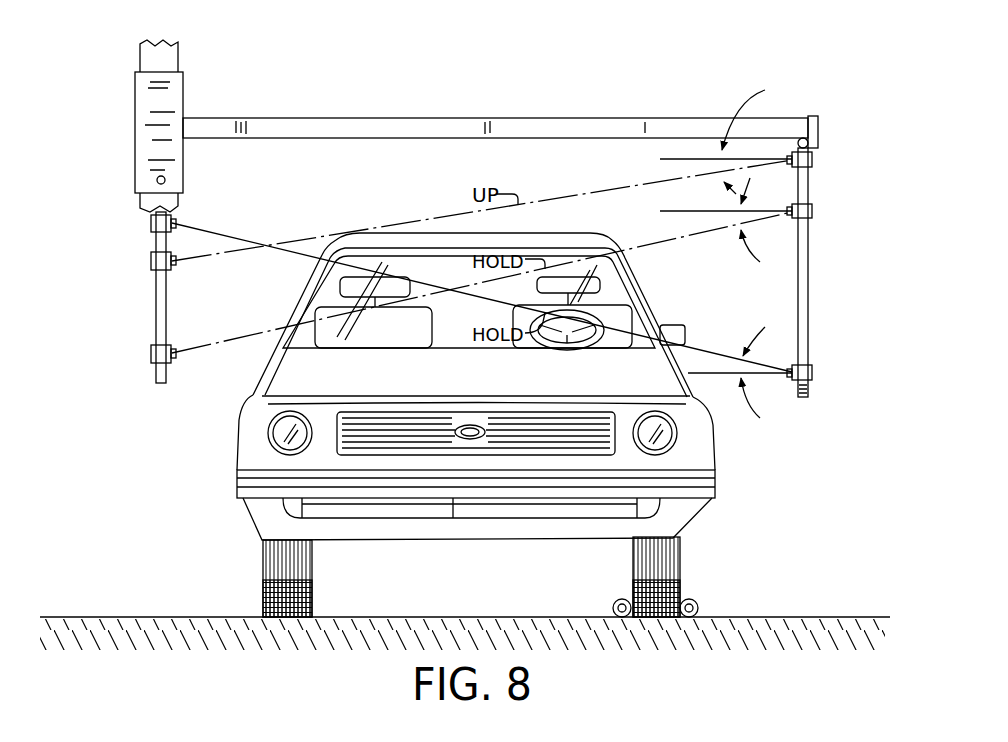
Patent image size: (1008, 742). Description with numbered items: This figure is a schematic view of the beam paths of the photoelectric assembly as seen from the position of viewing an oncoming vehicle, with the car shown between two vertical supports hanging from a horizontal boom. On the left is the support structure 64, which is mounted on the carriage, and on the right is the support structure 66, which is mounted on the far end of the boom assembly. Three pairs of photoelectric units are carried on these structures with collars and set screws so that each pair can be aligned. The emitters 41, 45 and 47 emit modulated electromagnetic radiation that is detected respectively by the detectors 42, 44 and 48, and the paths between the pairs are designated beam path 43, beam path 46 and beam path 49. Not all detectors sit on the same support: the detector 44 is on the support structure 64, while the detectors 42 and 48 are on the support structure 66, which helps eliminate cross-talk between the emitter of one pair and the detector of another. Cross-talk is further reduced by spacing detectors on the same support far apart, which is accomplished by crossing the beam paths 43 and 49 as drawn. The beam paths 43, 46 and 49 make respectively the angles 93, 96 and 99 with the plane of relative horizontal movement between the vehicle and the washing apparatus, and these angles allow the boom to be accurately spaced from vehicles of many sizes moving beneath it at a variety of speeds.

The emitter 41 is at (151, 262).
The detector 42 is at (812, 160).
The beam path 43 is at (623, 187).
The detector 44 is at (151, 354).
The emitter 45 is at (812, 212).
The beam path 46 is at (667, 243).
The emitter 47 is at (151, 220).
The detector 48 is at (812, 370).
The beam path 49 is at (707, 350).
The support structure 64 is at (156, 303).
The support structure 66 is at (808, 306).
The angle 93 is at (757, 113).
The angle 96 is at (754, 226).
The angle 99 is at (763, 382).